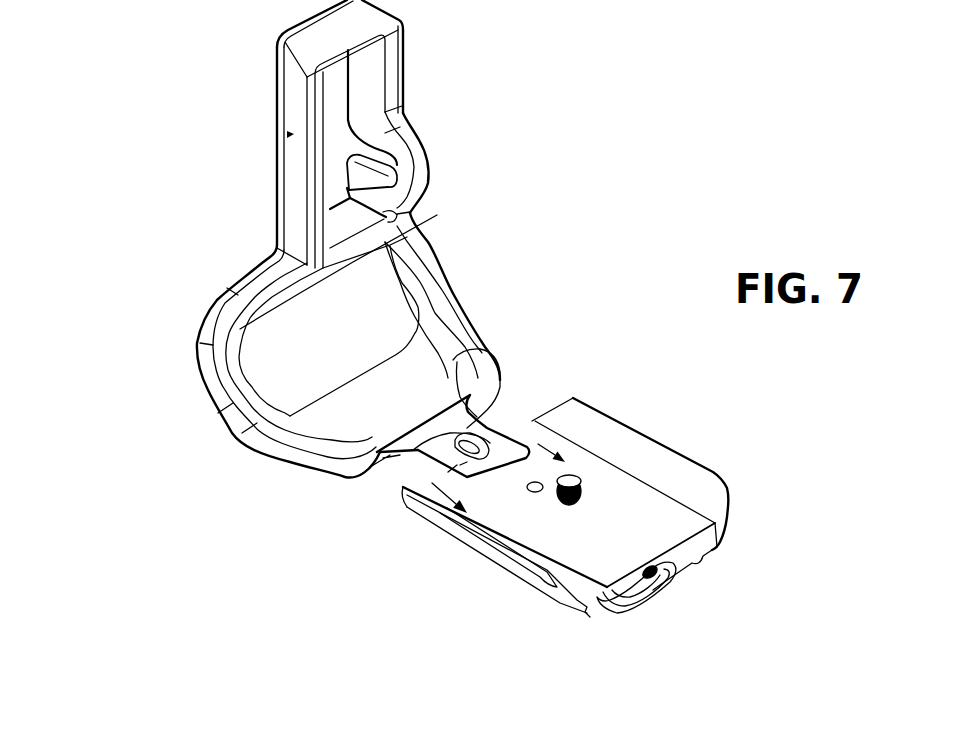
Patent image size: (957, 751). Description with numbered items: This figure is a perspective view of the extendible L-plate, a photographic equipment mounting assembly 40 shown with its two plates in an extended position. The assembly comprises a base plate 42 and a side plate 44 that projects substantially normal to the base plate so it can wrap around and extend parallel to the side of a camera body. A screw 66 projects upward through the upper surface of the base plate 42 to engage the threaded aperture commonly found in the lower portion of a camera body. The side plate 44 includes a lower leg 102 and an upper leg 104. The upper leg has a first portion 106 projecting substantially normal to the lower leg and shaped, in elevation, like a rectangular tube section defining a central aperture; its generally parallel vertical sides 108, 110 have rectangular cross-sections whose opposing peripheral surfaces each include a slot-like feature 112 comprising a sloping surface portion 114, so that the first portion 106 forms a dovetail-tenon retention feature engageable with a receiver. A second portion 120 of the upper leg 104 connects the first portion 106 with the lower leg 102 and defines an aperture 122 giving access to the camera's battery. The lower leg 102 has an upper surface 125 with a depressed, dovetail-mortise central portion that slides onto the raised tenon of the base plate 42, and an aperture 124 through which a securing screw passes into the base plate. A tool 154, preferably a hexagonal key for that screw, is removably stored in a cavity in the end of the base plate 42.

The photographic equipment mounting assembly 40 is at (235, 541).
The base plate 42 is at (715, 416).
The side plate 44 is at (104, 138).
The screw 66 is at (575, 479).
The lower leg 102 is at (481, 425).
The upper leg 104 is at (196, 243).
The first portion 106 is at (438, 98).
The vertical side 108 is at (407, 75).
The vertical side 110 is at (295, 157).
The slot-like feature 112 is at (283, 190).
The sloping surface portion 114 is at (276, 100).
The second portion 120 is at (432, 233).
The aperture 122 is at (447, 287).
The aperture 124 is at (400, 460).
The upper surface 125 is at (480, 343).
The tool 154 is at (652, 594).